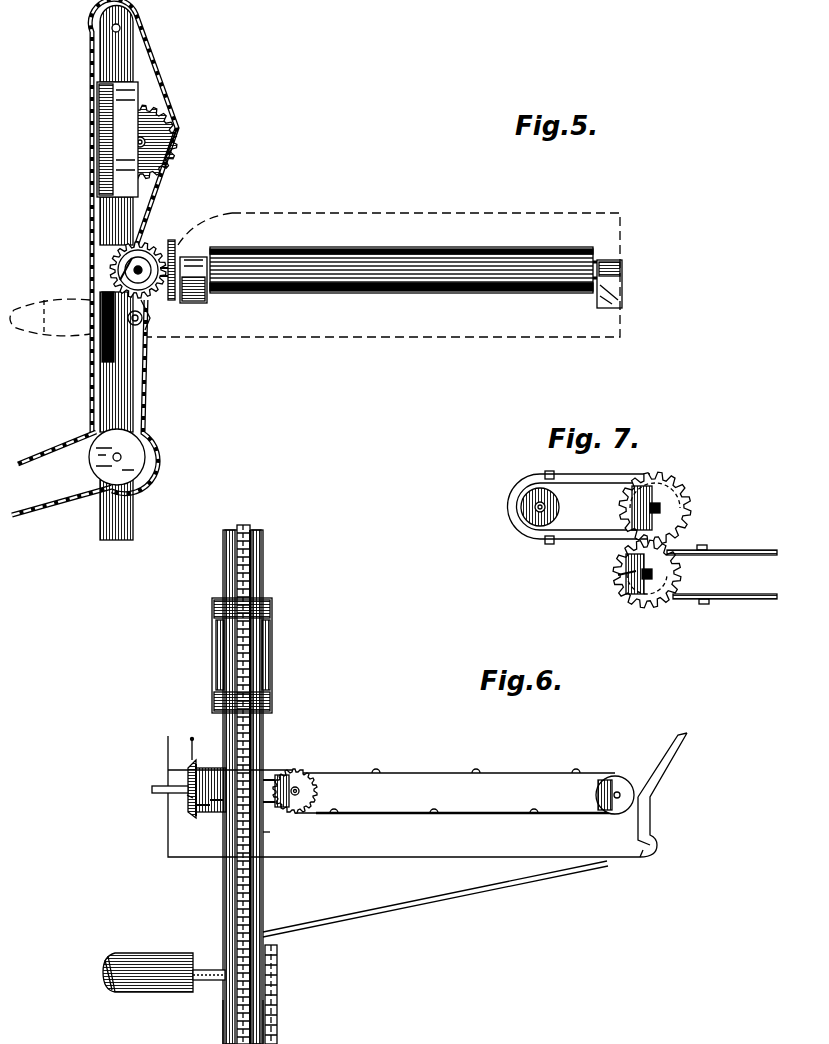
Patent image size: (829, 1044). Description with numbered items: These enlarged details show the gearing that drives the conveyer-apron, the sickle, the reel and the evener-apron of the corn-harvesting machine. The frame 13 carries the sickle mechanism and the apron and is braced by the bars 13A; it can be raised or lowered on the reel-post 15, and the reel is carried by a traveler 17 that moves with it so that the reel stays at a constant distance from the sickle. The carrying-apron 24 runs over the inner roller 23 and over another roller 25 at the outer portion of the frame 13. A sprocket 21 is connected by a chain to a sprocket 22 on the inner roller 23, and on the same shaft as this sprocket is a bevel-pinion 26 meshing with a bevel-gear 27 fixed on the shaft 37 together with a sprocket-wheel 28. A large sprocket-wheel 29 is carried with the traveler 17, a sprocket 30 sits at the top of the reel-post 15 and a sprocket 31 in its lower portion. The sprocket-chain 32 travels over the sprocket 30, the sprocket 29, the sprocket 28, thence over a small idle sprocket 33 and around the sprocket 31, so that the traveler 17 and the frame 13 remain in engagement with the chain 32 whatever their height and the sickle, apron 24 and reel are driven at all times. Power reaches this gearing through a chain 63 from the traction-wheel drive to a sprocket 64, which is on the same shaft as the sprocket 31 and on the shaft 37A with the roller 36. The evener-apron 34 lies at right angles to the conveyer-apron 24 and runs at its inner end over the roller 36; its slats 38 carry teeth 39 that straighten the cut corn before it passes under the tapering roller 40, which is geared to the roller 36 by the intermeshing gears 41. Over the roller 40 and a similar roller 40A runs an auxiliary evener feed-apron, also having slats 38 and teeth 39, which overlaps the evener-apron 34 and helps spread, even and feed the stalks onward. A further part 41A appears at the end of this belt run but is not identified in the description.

In FIG. 5, the frame 13 is at (605, 316).
In FIG. 6, the frame 13 is at (651, 812).
In FIG. 6, the bars 13A is at (492, 900).
In FIG. 5, the reel-post 15 is at (106, 210).
In FIG. 6, the reel-post 15 is at (256, 745).
In FIG. 5, the traveler 17 is at (106, 100).
In FIG. 6, the traveler 17 is at (270, 665).
In FIG. 5, the sprocket 21 is at (174, 250).
In FIG. 6, the sprocket 21 is at (314, 775).
In FIG. 6, the sprocket 22 is at (192, 776).
In FIG. 6, the inner roller 23 is at (188, 798).
In FIG. 5, the carrying-apron 24 is at (428, 296).
In FIG. 6, the carrying-apron 24 is at (458, 772).
In FIG. 5, the roller 25 is at (565, 260).
In FIG. 6, the roller 25 is at (617, 776).
In FIG. 5, the bevel-pinion 26 is at (170, 302).
In FIG. 6, the bevel-pinion 26 is at (212, 815).
In FIG. 5, the bevel-gear 27 is at (148, 262).
In FIG. 6, the bevel-gear 27 is at (197, 805).
In FIG. 5, the sprocket-wheel 28 is at (112, 270).
In FIG. 6, the sprocket-wheel 28 is at (270, 770).
In FIG. 5, the large sprocket-wheel 29 is at (178, 130).
In FIG. 6, the large sprocket-wheel 29 is at (250, 645).
In FIG. 5, the sprocket 30 is at (138, 14).
In FIG. 6, the sprocket 30 is at (247, 527).
In FIG. 6, the sprocket 31 is at (225, 982).
In FIG. 5, the sprocket-chain 32 is at (163, 177).
In FIG. 6, the sprocket-chain 32 is at (258, 580).
In FIG. 5, the small idle sprocket 33 is at (142, 332).
In FIG. 6, the small idle sprocket 33 is at (265, 832).
In FIG. 7, the evener-apron 34 is at (772, 540).
In FIG. 7, the roller 36 is at (668, 576).
In FIG. 6, the roller 36 is at (130, 992).
In FIG. 5, the shaft 37 is at (94, 312).
In FIG. 7, the shaft 37 is at (640, 577).
In FIG. 6, the shaft 37 is at (152, 789).
In FIG. 6, the shaft 37A is at (205, 965).
In FIG. 7, the slats 38 is at (545, 543).
In FIG. 7, the teeth 39 is at (549, 471).
In FIG. 7, the tapering roller 40 is at (690, 494).
In FIG. 7, the roller 40A is at (612, 488).
In FIG. 7, the intermeshing gears 41 is at (625, 528).
In FIG. 7, the pulley 41A is at (526, 498).
In FIG. 5, the chain 63 is at (72, 486).
In FIG. 6, the chain 63 is at (279, 1025).
In FIG. 5, the sprocket 64 is at (126, 457).
In FIG. 6, the sprocket 64 is at (279, 958).